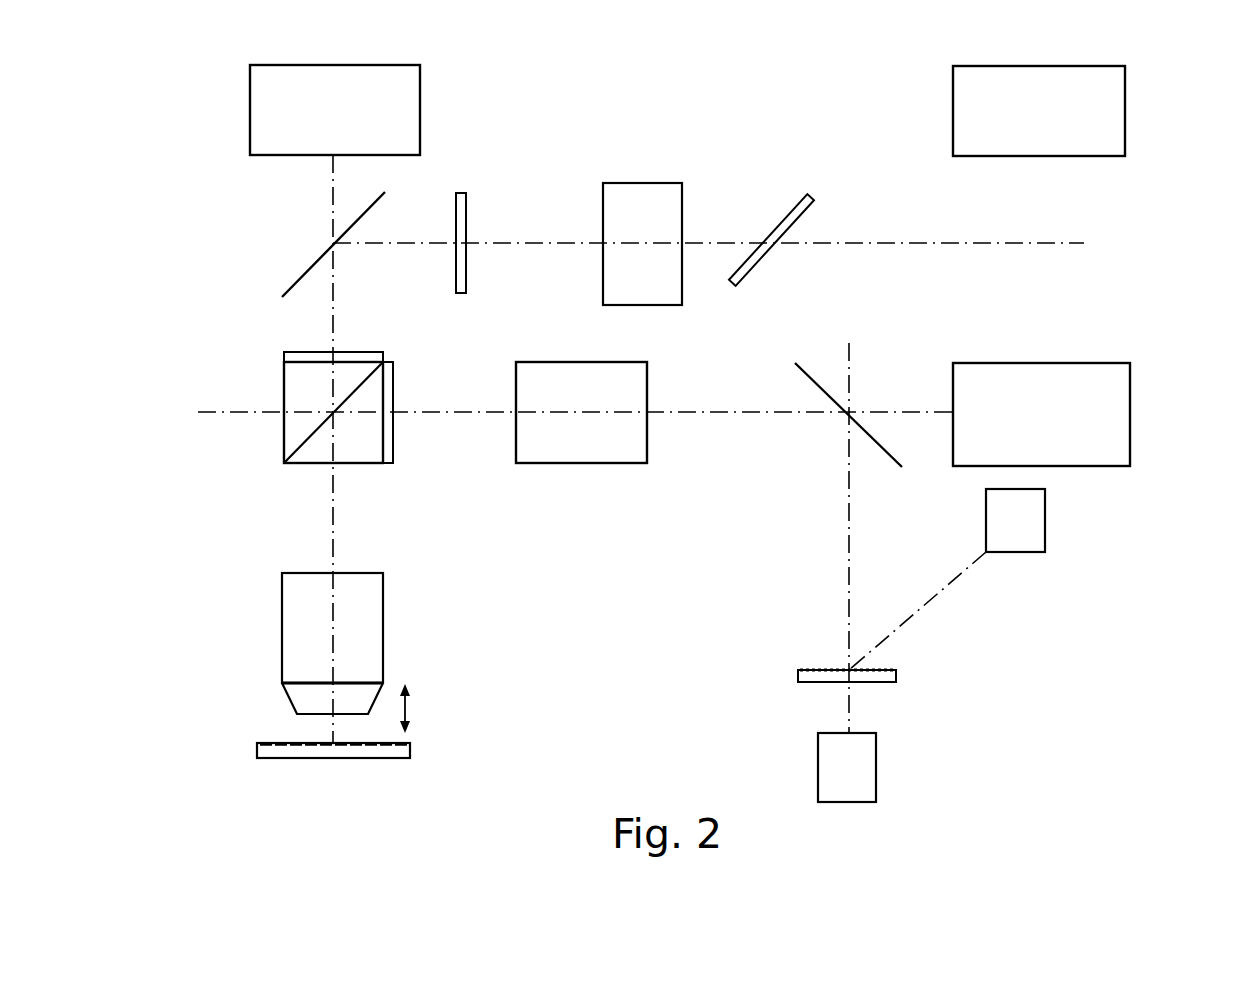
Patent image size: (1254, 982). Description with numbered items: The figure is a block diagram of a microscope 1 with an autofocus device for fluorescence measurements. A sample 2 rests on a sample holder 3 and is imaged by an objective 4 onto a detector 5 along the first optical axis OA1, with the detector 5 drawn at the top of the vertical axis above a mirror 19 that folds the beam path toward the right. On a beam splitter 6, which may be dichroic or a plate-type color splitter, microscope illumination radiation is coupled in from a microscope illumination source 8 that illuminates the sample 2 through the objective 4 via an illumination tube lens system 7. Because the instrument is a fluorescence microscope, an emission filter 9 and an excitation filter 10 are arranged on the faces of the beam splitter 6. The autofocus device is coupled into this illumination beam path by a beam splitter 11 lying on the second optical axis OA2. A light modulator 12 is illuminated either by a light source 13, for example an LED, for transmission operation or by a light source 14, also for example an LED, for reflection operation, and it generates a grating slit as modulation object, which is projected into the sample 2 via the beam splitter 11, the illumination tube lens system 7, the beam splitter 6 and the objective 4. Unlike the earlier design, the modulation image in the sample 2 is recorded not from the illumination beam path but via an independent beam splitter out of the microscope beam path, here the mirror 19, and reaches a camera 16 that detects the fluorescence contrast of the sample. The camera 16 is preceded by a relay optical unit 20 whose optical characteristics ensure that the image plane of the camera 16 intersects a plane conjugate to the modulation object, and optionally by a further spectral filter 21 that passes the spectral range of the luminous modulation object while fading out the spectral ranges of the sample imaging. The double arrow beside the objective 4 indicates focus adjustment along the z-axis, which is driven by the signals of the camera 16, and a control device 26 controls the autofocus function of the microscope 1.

The microscope 1 is at (530, 78).
The sample 2 is at (287, 742).
The sample holder 3 is at (257, 750).
The objective 4 is at (383, 603).
The detector 5 is at (250, 143).
The beam splitter 6 is at (284, 377).
The illumination tube lens system 7 is at (603, 463).
The microscope illumination source 8 is at (1130, 383).
The emission filter 9 is at (350, 352).
The excitation filter 10 is at (393, 453).
The beam splitter 11 is at (822, 389).
The light modulator 12 is at (896, 675).
The light source 13 is at (876, 768).
The light source 14 is at (1045, 528).
The camera 16 is at (777, 217).
The mirror 19 is at (308, 268).
The relay optical unit 20 is at (650, 183).
The spectral filter 21 is at (466, 276).
The control device 26 is at (1125, 118).
The first optical axis OA1 is at (333, 510).
The optical axis OA2 is at (848, 565).